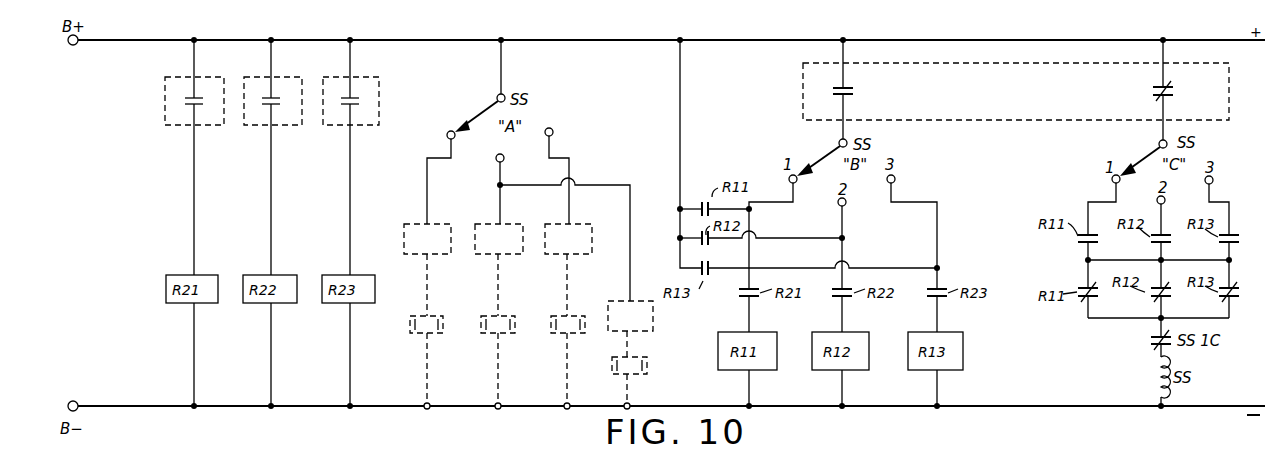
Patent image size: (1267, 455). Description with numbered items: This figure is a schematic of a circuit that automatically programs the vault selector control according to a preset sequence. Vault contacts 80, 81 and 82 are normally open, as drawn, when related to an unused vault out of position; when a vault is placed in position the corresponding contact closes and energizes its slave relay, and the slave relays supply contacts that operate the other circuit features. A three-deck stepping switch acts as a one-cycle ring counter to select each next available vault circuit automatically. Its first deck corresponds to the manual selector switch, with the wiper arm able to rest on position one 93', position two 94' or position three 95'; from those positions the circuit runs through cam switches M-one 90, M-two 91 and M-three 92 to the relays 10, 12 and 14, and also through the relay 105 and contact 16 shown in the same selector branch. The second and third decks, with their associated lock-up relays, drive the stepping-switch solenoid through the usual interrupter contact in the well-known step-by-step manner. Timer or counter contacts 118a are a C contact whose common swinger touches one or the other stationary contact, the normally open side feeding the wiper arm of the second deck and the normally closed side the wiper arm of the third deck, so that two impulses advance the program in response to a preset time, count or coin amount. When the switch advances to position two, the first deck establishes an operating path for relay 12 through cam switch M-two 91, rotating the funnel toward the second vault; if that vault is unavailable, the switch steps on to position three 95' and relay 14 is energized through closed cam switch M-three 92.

The vault contact 80 is at (165, 104).
The vault contact 81 is at (262, 123).
The vault contact 82 is at (337, 125).
The switch position 1 of deck A 93' is at (422, 177).
The switch position 2 of deck A 94' is at (534, 227).
The switch position 3 of deck A 95' is at (579, 173).
The cam switch M-1 90 is at (416, 224).
The cam switch M2 91 is at (495, 224).
The cam switch M-3 92 is at (587, 223).
The relay 10 is at (413, 335).
The relay 12 is at (490, 335).
The relay 14 is at (557, 335).
The relay 105 is at (647, 333).
The relay contact 16 is at (647, 373).
The timer or counter contacts 118a is at (985, 121).